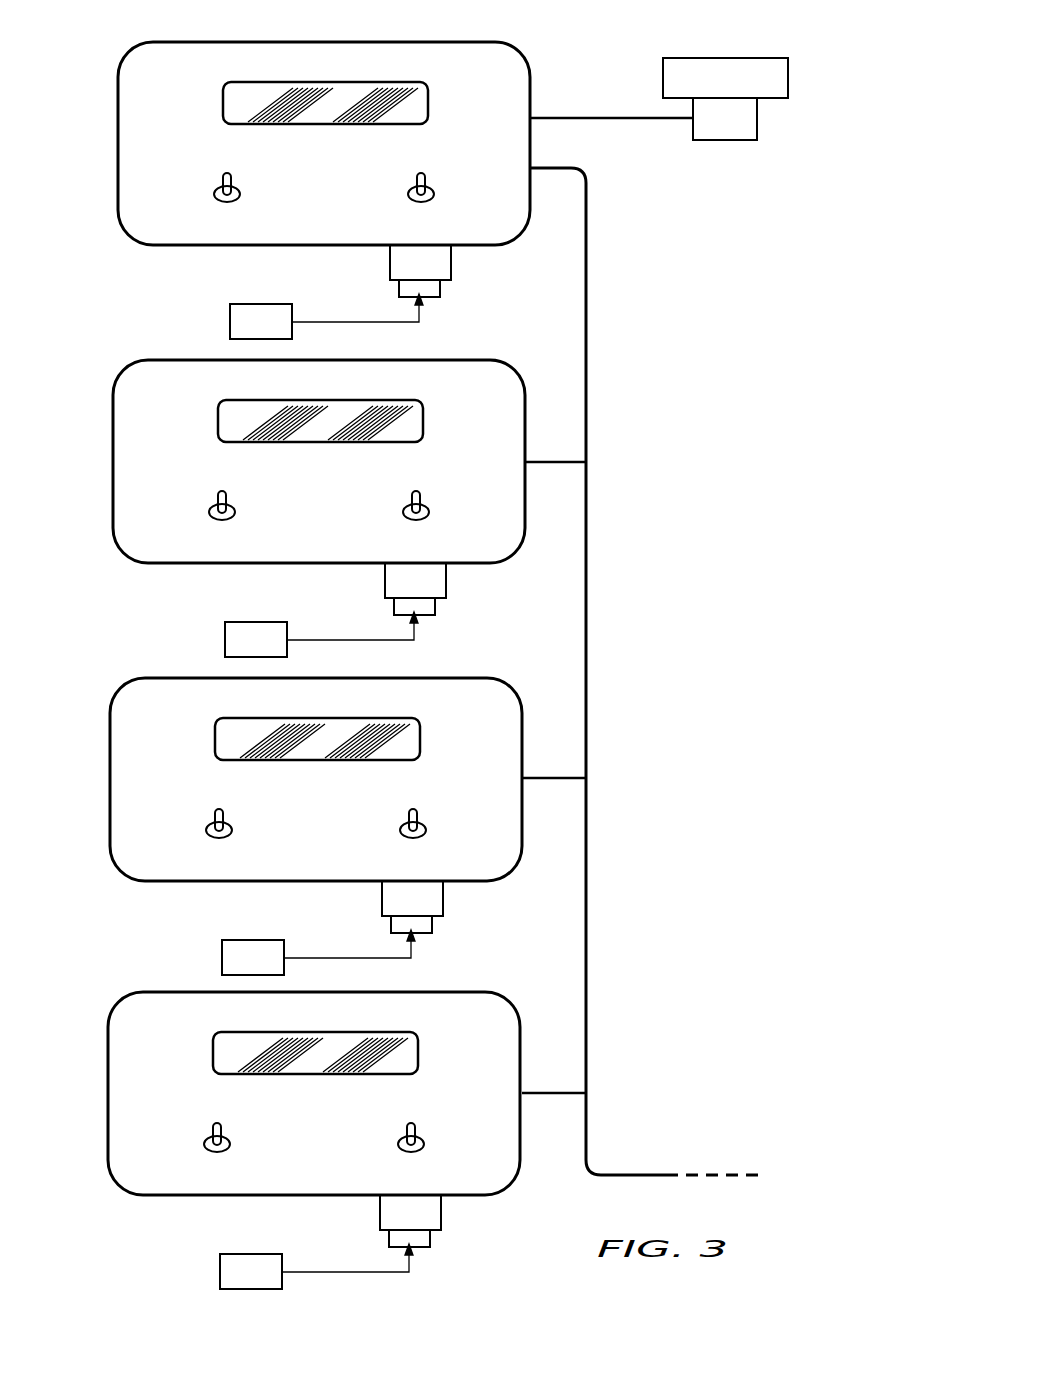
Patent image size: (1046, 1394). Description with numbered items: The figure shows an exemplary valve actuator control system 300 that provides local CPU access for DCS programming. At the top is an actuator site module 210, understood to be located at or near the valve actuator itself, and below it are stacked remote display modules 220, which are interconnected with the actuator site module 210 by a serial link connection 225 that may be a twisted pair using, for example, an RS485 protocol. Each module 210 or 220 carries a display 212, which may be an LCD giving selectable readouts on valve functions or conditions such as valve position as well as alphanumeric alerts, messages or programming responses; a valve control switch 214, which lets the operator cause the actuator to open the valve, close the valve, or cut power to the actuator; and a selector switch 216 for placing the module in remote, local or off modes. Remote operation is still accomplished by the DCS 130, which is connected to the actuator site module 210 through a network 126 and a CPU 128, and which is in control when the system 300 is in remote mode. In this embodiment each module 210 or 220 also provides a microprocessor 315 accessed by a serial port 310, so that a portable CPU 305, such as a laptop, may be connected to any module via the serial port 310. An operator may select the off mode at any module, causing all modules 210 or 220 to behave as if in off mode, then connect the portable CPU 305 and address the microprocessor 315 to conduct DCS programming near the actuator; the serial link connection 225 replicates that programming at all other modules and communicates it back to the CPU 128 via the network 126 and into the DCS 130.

The valve actuator control system 300 is at (596, 62).
The actuator site module 210 is at (289, 143).
The remote display module 220 is at (283, 777).
The display 212 is at (286, 577).
The valve control switch 214 is at (224, 666).
The selector switch 216 is at (425, 666).
The portable CPU 305 is at (288, 791).
The serial port 310 is at (448, 770).
The microprocessor 315 is at (380, 738).
The network 126 is at (623, 120).
The CPU 128 is at (757, 118).
The DCS 130 is at (788, 78).
The serial link connection 225 is at (586, 683).